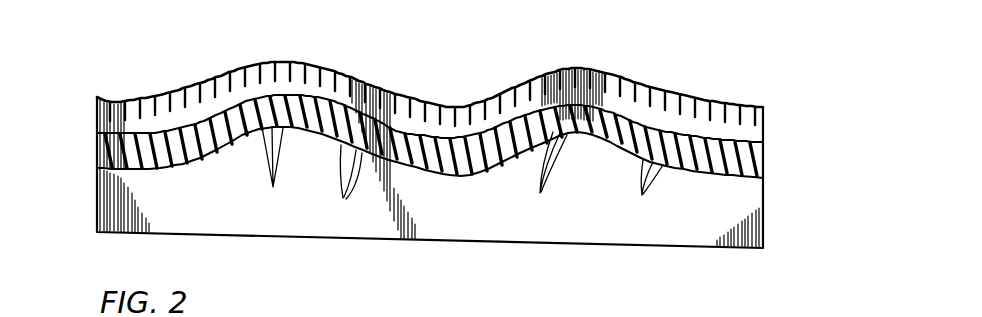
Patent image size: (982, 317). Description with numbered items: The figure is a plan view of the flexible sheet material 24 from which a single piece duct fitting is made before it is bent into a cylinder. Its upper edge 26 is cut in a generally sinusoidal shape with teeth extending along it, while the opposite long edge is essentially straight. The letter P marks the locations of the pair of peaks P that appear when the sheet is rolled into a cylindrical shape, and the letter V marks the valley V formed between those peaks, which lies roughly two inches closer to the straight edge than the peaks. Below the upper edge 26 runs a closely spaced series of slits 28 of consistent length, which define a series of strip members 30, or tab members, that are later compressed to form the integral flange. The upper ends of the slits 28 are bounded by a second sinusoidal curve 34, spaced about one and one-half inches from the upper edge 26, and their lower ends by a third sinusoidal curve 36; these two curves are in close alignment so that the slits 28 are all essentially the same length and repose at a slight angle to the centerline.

The sheet material 24 is at (723, 201).
The upper edge 26 is at (677, 98).
The slits 28 is at (444, 177).
The strip members 30 is at (462, 174).
The curve 34 is at (129, 133).
The curve 36 is at (200, 160).
The peaks P is at (287, 62).
The valley V is at (450, 103).